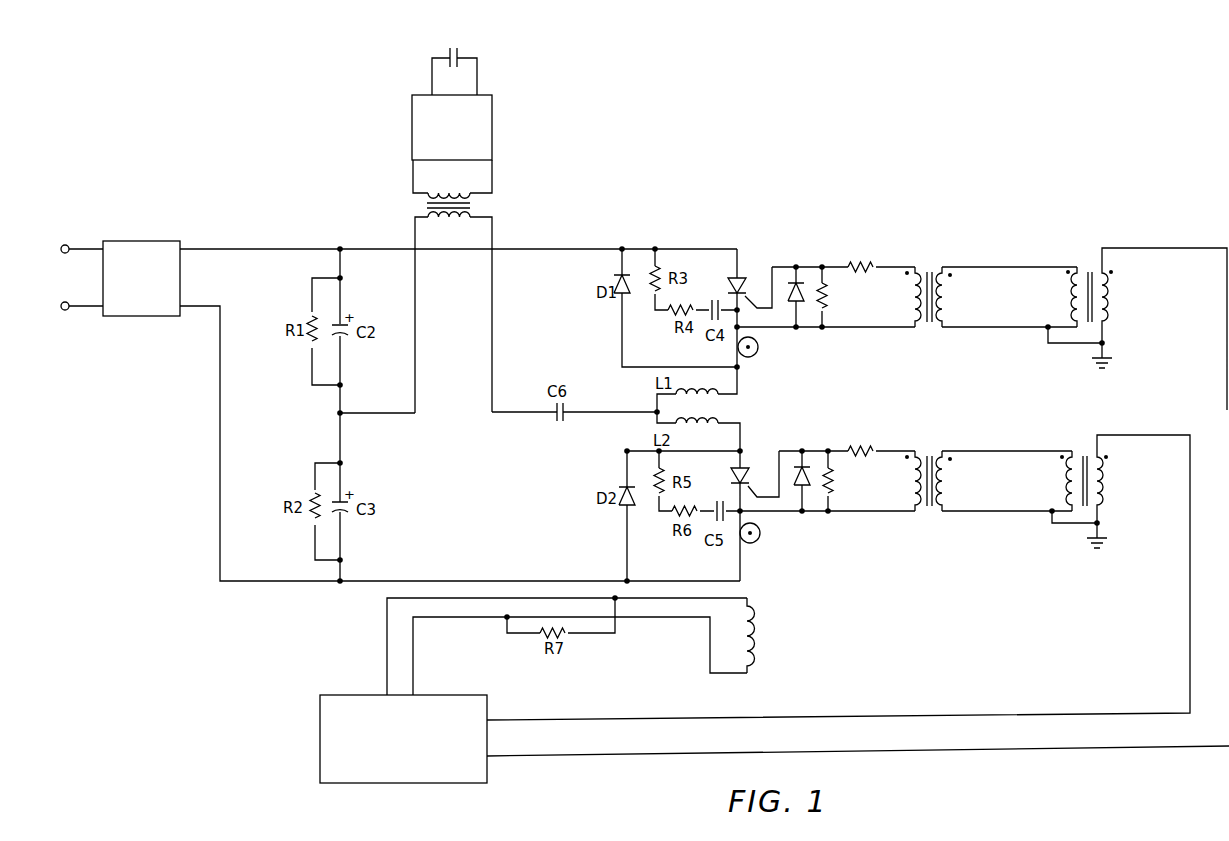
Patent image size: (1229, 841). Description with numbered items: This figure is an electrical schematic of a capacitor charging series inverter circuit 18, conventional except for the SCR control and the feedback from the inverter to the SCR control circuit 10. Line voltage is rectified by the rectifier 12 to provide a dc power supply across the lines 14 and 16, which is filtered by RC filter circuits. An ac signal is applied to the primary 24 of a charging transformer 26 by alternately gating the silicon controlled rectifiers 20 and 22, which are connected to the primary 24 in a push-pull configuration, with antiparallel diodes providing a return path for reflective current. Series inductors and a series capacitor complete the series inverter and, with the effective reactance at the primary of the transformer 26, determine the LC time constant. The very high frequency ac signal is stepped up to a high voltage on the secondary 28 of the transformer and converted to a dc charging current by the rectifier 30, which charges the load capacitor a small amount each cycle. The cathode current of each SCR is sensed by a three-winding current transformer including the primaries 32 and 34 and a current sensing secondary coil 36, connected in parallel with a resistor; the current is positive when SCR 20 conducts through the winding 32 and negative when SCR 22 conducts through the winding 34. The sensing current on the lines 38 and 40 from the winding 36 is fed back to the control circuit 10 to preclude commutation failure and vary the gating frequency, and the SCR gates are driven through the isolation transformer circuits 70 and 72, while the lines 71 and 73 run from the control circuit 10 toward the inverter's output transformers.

The SCR control circuit 10 is at (488, 713).
The rectifier 12 is at (146, 240).
The dc supply line 14 is at (258, 248).
The dc supply line 16 is at (213, 346).
The inverter circuit 18 is at (667, 200).
The silicon controlled rectifier 20 is at (750, 282).
The silicon controlled rectifier 22 is at (750, 470).
The primary 24 is at (468, 218).
The charging transformer 26 is at (480, 208).
The secondary 28 is at (478, 195).
The rectifier 30 is at (498, 128).
The current transformer primary winding 32 is at (758, 355).
The current transformer primary winding 34 is at (760, 541).
The current sensing secondary coil 36 is at (757, 638).
The sensing current line 38 is at (385, 641).
The sensing current line 40 is at (415, 665).
The isolation transformer circuit 70 is at (950, 263).
The isolation transformer circuit 72 is at (934, 522).
The feedback line 71 is at (553, 758).
The feedback line 73 is at (554, 719).